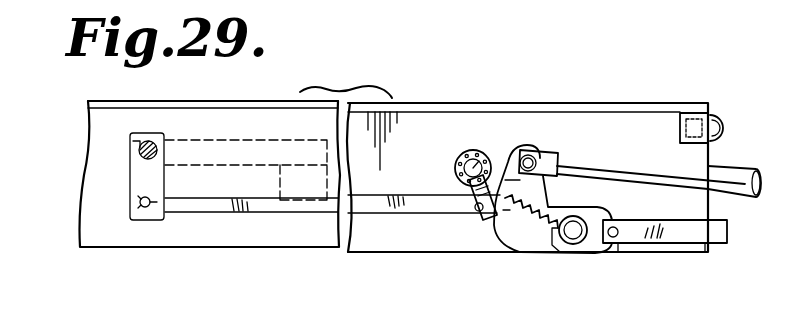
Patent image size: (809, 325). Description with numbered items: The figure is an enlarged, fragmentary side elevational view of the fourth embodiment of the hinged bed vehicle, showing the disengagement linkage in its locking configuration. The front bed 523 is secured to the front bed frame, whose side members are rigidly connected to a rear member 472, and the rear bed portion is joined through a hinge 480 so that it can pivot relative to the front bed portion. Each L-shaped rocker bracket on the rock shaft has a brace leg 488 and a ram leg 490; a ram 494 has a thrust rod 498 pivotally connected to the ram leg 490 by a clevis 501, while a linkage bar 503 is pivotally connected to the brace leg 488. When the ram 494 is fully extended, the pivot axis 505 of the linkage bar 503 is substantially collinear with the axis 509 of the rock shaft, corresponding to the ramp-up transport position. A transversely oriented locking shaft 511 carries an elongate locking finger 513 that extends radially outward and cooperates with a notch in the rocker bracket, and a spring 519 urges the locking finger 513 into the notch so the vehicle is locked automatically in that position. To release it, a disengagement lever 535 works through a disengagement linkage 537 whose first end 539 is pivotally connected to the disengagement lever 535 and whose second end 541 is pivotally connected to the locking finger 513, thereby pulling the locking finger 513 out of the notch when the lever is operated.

The rear member 472 is at (689, 113).
The hinge 480 is at (717, 116).
The brace leg 488 is at (615, 250).
The ram leg 490 is at (527, 146).
The ram 494 is at (742, 167).
The thrust rod 498 is at (671, 173).
The clevis 501 is at (542, 160).
The linkage bar 503 is at (728, 232).
The pivot axis 505 is at (620, 228).
The axis of the rock shaft 509 is at (584, 218).
The locking shaft 511 is at (477, 157).
The locking finger 513 is at (458, 186).
The spring 519 is at (555, 252).
The front bed 523 is at (583, 97).
The disengagement lever 535 is at (218, 150).
The disengagement linkage 537 is at (377, 207).
The first end 539 is at (171, 205).
The second end 541 is at (462, 207).